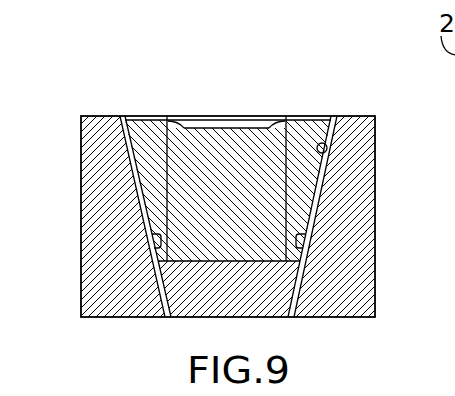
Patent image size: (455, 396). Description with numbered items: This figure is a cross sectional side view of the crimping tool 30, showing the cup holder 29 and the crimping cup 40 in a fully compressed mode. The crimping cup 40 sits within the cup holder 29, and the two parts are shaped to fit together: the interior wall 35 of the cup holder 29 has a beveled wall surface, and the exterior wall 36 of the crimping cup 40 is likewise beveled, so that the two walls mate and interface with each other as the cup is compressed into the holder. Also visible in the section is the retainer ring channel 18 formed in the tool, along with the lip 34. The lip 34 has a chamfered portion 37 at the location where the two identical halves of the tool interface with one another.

The crimping tool 30 is at (87, 93).
The cup holder 29 is at (363, 225).
The lip 34 is at (231, 119).
The chamfered portion 37 is at (173, 121).
The crimping cup 40 is at (308, 128).
The interior wall 35 is at (327, 149).
The exterior wall 36 is at (318, 178).
The retainer ring channel 18 is at (305, 242).